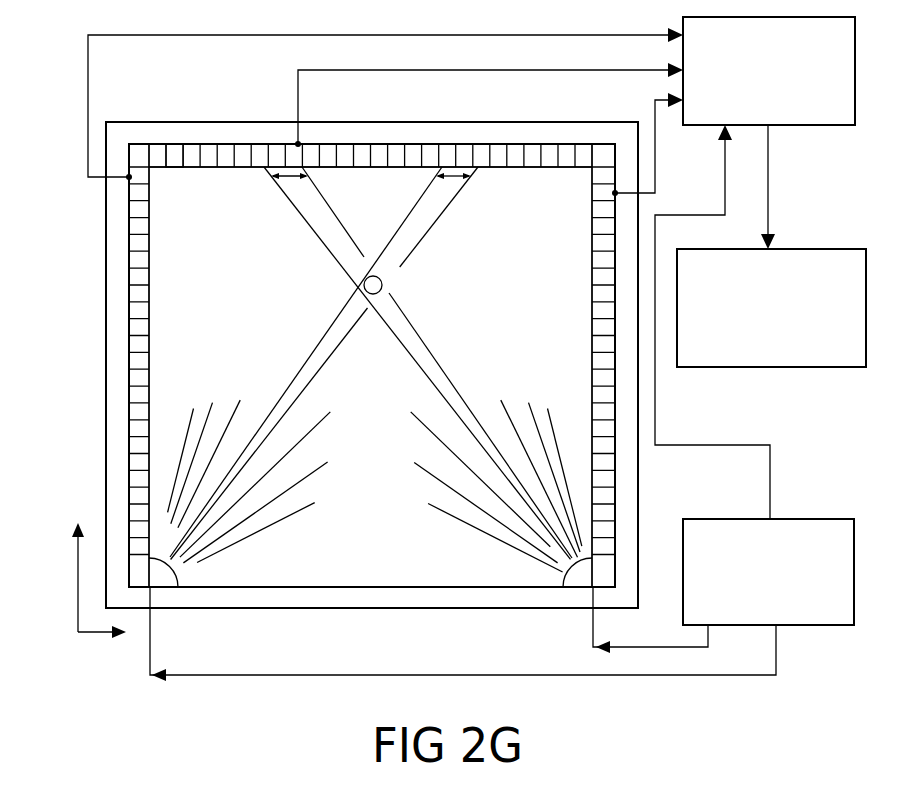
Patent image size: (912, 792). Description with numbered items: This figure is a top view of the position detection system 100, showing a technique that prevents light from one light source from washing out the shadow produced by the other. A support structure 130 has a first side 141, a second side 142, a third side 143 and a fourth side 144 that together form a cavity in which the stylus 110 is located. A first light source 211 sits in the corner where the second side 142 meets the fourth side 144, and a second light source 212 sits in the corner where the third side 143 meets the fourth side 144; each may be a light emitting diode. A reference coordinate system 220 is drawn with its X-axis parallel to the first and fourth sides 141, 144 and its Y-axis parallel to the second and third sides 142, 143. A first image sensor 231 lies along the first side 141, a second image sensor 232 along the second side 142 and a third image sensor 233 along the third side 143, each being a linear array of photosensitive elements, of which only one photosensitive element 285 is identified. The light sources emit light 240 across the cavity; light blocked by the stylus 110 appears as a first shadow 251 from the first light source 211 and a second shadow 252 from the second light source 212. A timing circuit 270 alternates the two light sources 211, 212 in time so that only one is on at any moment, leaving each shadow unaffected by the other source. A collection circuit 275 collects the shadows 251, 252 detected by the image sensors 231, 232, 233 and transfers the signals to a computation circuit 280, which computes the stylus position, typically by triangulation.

The position detection system 100 is at (70, 270).
The stylus 110 is at (383, 285).
The support structure 130 is at (446, 122).
The first side 141 is at (187, 176).
The second side 142 is at (189, 291).
The third side 143 is at (572, 306).
The fourth side 144 is at (395, 570).
The first light source 211 is at (166, 580).
The second light source 212 is at (580, 578).
The reference coordinate system 220 is at (64, 638).
The first image sensor 231 is at (543, 168).
The second image sensor 232 is at (150, 352).
The third image sensor 233 is at (592, 352).
The light 240 is at (281, 556).
The first shadow 251 is at (452, 182).
The second shadow 252 is at (290, 183).
The timing circuit 270 is at (808, 625).
The collection circuit 275 is at (808, 125).
The computation circuit 280 is at (780, 367).
The photosensitive element 285 is at (175, 157).